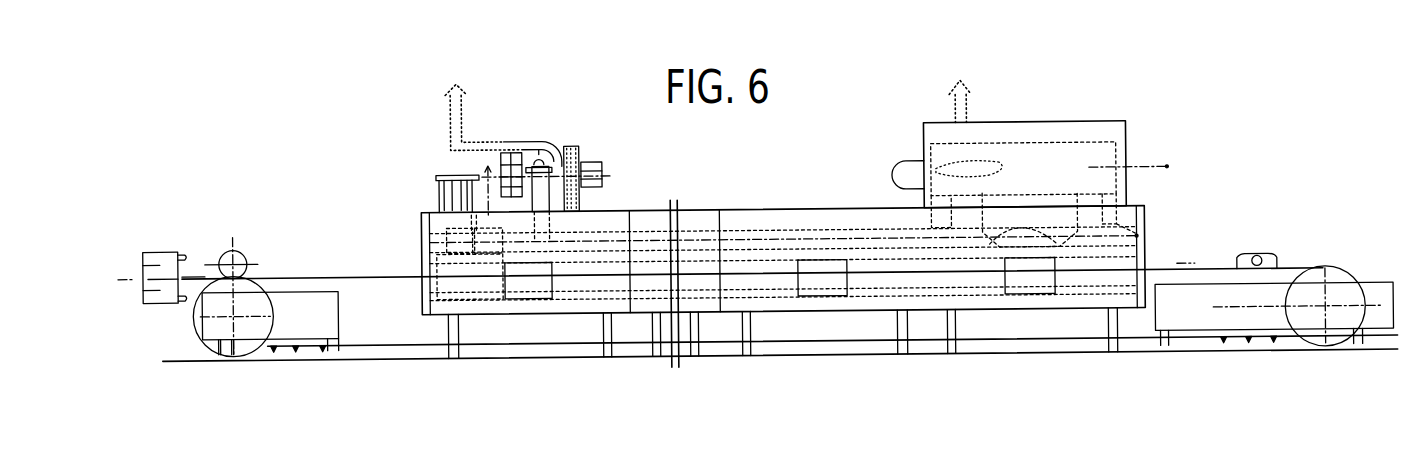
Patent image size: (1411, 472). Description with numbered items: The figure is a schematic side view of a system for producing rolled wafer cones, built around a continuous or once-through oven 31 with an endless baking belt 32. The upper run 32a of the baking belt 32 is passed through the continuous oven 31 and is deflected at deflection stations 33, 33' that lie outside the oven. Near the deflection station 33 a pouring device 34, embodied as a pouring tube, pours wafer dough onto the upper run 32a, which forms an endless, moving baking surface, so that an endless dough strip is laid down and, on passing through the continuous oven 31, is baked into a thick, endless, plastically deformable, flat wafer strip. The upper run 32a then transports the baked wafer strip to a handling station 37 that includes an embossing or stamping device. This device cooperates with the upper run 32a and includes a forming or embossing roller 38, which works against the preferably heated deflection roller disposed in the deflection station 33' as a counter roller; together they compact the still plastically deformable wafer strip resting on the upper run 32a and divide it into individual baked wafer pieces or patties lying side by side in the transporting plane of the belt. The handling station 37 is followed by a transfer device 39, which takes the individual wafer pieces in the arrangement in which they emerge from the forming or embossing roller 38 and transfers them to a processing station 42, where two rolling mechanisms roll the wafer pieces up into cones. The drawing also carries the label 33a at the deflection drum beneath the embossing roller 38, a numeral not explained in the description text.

The continuous oven 31 is at (1128, 135).
The endless baking belt 32 is at (382, 346).
The upper run 32a is at (360, 277).
The deflection station 33 is at (1298, 282).
The return drum 33a is at (200, 324).
The deflection station 33' is at (270, 355).
The pouring device 34 is at (1265, 257).
The handling station 37 is at (243, 238).
The forming or embossing roller 38 is at (241, 255).
The transfer device 39 is at (198, 277).
The processing station 42 is at (167, 244).